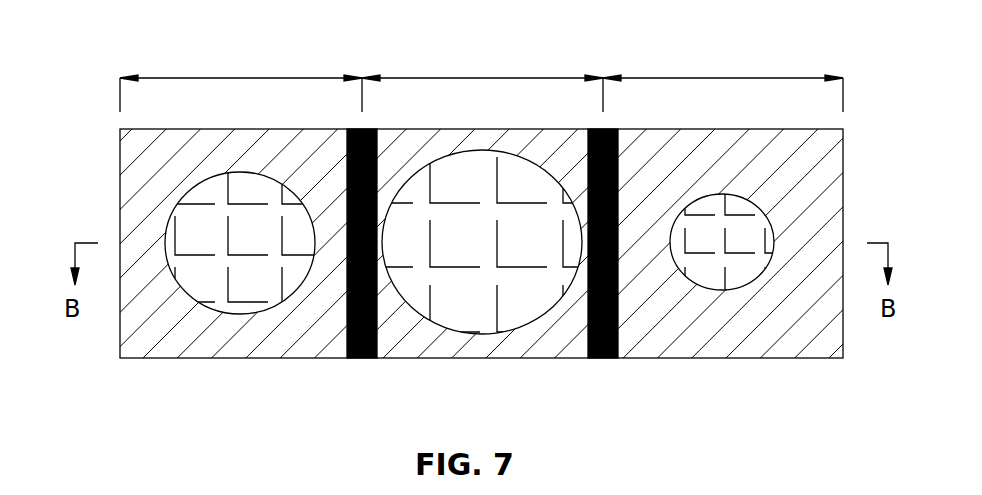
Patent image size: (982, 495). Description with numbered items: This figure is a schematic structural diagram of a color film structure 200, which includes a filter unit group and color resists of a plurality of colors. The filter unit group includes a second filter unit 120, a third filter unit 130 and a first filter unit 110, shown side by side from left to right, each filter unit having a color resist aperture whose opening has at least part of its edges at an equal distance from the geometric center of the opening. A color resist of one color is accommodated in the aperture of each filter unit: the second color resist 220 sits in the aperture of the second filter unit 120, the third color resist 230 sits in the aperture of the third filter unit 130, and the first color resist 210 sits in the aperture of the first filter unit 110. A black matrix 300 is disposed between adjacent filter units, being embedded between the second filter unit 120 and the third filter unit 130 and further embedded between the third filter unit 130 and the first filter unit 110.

The color film structure 200 is at (67, 31).
The second filter unit 120 is at (241, 81).
The third filter unit 130 is at (482, 81).
The first filter unit 110 is at (723, 81).
The second color resist 220 is at (245, 297).
The third color resist 230 is at (488, 300).
The first color resist 210 is at (733, 275).
The black matrix 300 is at (367, 358).